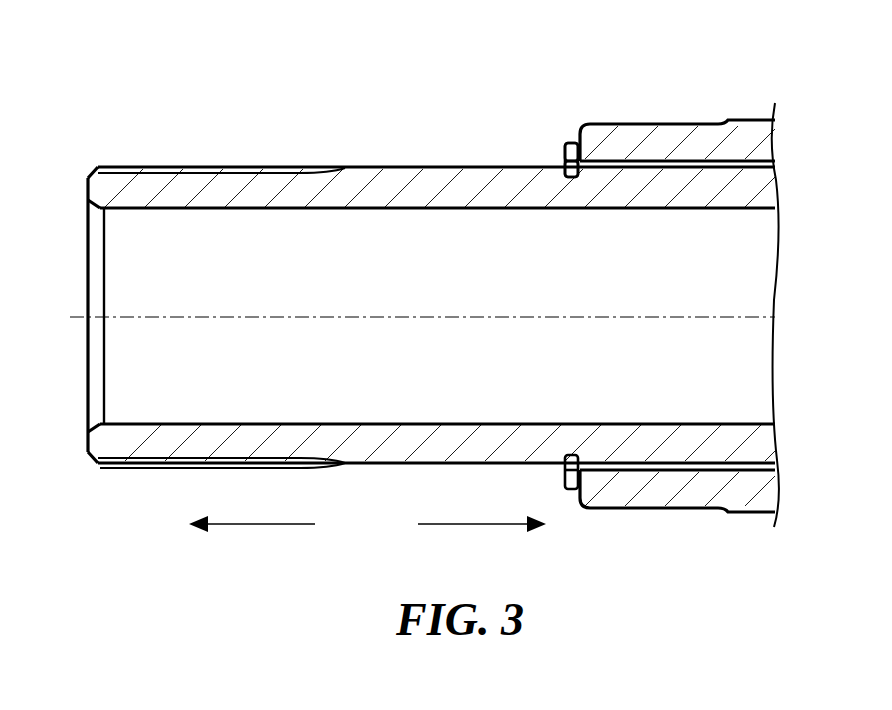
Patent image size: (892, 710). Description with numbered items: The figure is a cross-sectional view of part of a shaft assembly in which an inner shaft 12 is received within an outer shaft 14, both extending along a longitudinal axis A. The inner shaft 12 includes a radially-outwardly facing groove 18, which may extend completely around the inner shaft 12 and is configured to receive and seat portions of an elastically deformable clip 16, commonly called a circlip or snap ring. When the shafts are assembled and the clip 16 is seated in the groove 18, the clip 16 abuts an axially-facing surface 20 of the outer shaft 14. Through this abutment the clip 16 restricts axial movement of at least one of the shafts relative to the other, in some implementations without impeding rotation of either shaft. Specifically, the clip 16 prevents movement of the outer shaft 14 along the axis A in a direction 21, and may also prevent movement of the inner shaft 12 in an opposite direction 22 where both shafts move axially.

The inner shaft 12 is at (348, 185).
The outer shaft 14 is at (642, 137).
The elastically deformable clip 16 is at (565, 148).
The groove 18 is at (576, 178).
The axially-facing surface 20 is at (578, 140).
The direction 21 is at (258, 524).
The direction 22 is at (473, 524).
The longitudinal axis A is at (685, 318).